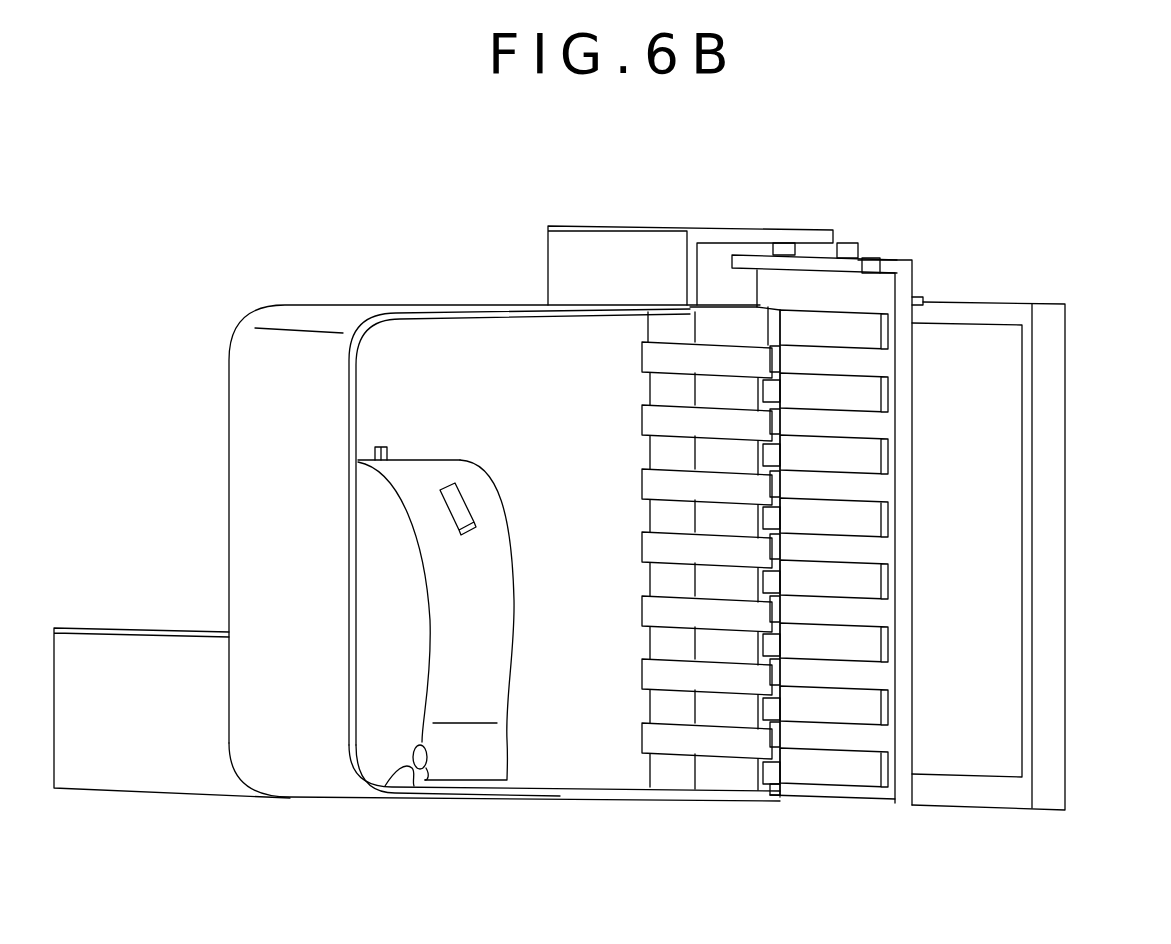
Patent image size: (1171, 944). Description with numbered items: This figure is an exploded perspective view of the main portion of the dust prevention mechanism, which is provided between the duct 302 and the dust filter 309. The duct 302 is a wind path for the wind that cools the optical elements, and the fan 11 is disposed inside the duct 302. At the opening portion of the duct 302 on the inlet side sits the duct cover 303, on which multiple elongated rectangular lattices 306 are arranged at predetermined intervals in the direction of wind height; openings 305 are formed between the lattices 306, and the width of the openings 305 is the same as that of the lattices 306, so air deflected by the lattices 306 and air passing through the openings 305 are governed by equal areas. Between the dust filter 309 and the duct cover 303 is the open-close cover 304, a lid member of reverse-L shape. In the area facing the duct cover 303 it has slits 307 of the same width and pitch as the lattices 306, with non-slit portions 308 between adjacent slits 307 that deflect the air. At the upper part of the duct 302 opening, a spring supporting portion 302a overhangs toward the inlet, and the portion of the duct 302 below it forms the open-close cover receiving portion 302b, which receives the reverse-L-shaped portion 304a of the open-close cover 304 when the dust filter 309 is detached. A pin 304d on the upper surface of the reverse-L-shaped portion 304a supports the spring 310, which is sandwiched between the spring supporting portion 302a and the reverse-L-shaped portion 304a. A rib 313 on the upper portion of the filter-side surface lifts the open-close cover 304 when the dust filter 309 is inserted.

The fan 11 is at (400, 727).
The duct 302 is at (367, 303).
The spring supporting portion 302a is at (717, 228).
The open-close cover receiving portion 302b is at (733, 307).
The duct cover 303 is at (718, 745).
The open-close cover 304 is at (848, 775).
The reverse-L-shaped portion 304a is at (885, 268).
The pin 304d is at (855, 242).
The openings 305 is at (720, 330).
The lattices 306 is at (658, 362).
The slits 307 is at (867, 328).
The non-slit portions 308 is at (867, 362).
The dust filter 309 is at (1045, 605).
The spring 310 is at (858, 252).
The rib 313 is at (925, 297).